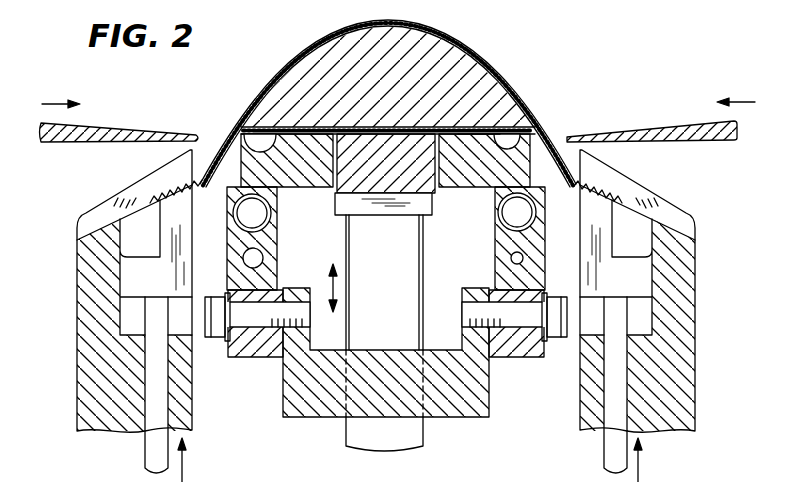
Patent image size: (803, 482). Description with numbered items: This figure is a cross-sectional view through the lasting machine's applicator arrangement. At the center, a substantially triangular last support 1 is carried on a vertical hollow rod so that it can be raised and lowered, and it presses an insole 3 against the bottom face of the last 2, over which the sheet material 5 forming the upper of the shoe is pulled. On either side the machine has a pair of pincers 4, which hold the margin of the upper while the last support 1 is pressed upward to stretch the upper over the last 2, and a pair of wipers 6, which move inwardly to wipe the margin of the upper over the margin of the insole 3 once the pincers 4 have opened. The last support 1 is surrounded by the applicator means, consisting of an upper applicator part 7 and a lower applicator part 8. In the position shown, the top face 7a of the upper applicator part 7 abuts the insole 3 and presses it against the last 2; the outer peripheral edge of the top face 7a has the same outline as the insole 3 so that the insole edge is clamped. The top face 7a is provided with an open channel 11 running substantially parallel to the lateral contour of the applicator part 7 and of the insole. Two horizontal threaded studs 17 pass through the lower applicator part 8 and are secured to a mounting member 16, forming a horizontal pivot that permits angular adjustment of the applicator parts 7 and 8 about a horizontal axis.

The last support 1 is at (428, 200).
The last 2 is at (461, 64).
The insole 3 is at (298, 127).
The pincers 4 is at (113, 204).
The sheet material 5 is at (303, 50).
The wipers 6 is at (142, 132).
The upper applicator part 7 is at (236, 184).
The top face 7a is at (471, 131).
The lower applicator part 8 is at (230, 239).
The open channel 11 is at (262, 168).
The mounting member 16 is at (467, 417).
The threaded studs 17 is at (220, 338).